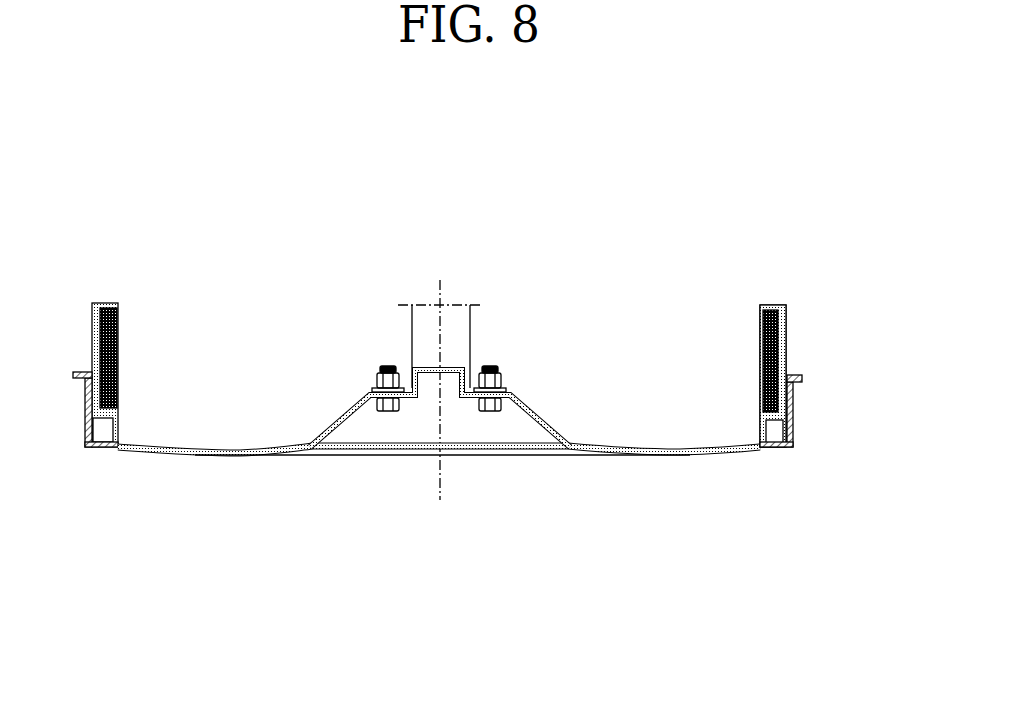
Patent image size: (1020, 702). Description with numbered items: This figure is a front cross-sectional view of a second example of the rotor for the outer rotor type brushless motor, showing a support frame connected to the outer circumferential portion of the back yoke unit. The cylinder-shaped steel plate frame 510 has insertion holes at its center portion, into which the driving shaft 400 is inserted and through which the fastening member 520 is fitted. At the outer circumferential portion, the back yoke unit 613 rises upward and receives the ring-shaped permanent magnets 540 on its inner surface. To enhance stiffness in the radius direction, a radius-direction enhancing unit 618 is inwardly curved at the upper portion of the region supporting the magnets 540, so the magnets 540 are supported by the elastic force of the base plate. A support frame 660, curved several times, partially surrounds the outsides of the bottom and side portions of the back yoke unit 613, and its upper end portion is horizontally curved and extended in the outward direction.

The driving shaft 400 is at (416, 334).
The steel plate frame 510 is at (698, 456).
The fastening member 520 is at (491, 450).
The permanent magnets 540 is at (765, 333).
The back yoke unit 613 is at (784, 367).
The radius-direction enhancing unit 618 is at (773, 305).
The support frame 660 is at (790, 414).